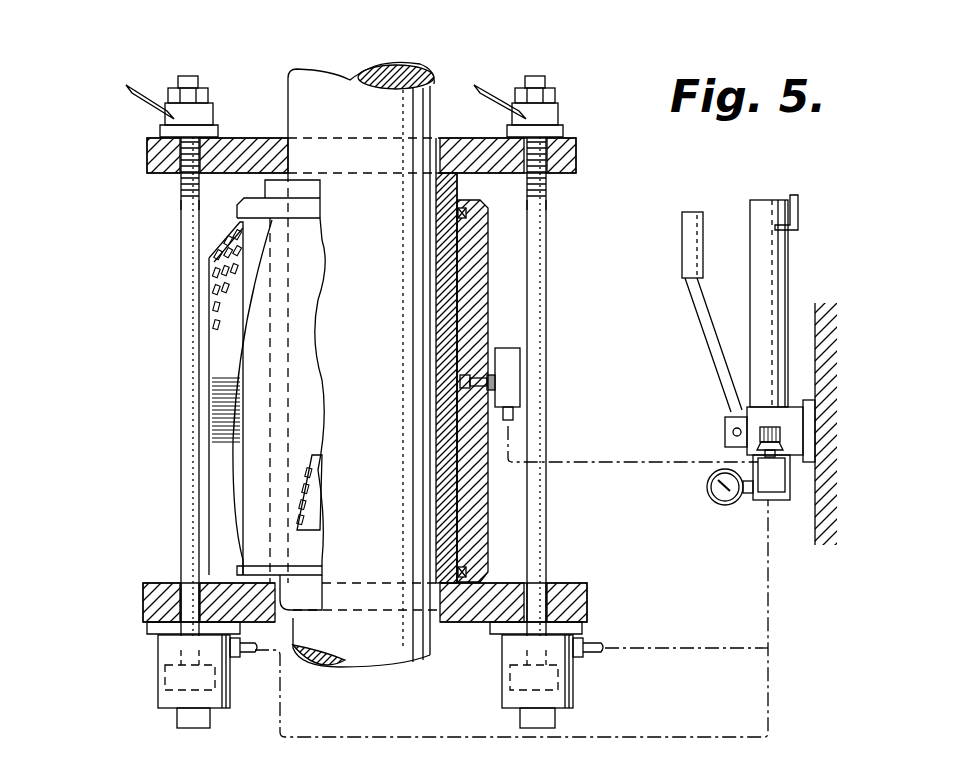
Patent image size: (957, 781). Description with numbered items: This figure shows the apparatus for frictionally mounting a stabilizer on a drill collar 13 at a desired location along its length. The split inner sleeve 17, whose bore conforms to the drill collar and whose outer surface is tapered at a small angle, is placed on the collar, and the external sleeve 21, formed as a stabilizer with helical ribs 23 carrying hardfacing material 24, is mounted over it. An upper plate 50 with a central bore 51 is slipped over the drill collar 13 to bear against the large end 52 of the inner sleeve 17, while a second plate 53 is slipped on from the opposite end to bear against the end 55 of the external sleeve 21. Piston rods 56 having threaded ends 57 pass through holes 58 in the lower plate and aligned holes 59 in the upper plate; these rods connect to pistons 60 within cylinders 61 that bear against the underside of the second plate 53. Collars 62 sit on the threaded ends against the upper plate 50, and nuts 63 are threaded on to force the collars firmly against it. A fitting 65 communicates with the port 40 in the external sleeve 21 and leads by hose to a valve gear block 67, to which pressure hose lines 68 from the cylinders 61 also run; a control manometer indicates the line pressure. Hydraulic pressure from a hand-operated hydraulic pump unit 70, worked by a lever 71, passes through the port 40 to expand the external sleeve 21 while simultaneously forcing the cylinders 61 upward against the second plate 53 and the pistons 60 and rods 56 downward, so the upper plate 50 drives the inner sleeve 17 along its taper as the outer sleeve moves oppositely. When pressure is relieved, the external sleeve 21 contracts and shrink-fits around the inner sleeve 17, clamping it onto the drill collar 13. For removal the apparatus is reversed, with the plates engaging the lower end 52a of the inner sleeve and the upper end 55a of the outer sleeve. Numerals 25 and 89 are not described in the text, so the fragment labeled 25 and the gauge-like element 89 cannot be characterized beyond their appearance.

The drill collar 13 is at (360, 80).
The inner sleeve 17 is at (448, 490).
The external sleeve 21 is at (262, 317).
The helical ribs 23 is at (220, 360).
The hardfacing material 24 is at (305, 505).
The upper member 25 is at (254, 6).
The port 40 is at (466, 378).
The upper plate 50 is at (162, 160).
The central bore 51 is at (438, 136).
The large end 52 is at (278, 182).
The lower end 52a is at (290, 600).
The second plate 53 is at (150, 605).
The end 55 is at (482, 576).
The upper end 55a is at (476, 215).
The piston rods 56 is at (186, 416).
The threaded ends 57 is at (186, 200).
The holes 58 is at (190, 592).
The aligned holes 59 is at (185, 170).
The pistons 60 is at (165, 705).
The cylinders 61 is at (165, 655).
The collars 62 is at (165, 113).
The nuts 63 is at (176, 88).
The fitting 65 is at (512, 380).
The valve gear block 67 is at (775, 495).
The pressure hose lines 68 is at (688, 648).
The hydraulic pump unit 70 is at (770, 270).
The lever 71 is at (722, 385).
The pressure gauge 89 is at (731, 492).